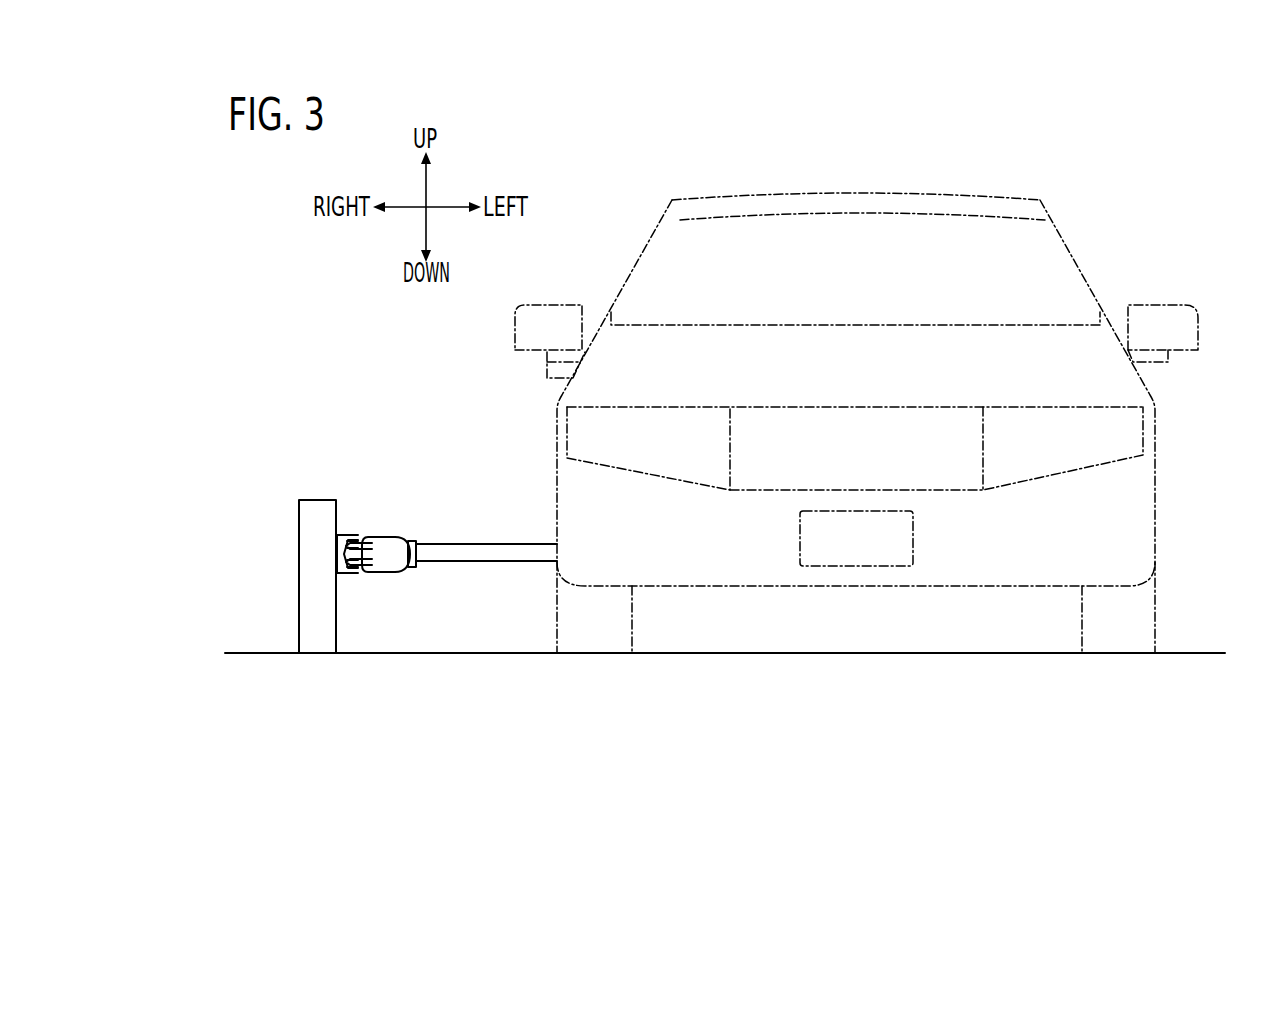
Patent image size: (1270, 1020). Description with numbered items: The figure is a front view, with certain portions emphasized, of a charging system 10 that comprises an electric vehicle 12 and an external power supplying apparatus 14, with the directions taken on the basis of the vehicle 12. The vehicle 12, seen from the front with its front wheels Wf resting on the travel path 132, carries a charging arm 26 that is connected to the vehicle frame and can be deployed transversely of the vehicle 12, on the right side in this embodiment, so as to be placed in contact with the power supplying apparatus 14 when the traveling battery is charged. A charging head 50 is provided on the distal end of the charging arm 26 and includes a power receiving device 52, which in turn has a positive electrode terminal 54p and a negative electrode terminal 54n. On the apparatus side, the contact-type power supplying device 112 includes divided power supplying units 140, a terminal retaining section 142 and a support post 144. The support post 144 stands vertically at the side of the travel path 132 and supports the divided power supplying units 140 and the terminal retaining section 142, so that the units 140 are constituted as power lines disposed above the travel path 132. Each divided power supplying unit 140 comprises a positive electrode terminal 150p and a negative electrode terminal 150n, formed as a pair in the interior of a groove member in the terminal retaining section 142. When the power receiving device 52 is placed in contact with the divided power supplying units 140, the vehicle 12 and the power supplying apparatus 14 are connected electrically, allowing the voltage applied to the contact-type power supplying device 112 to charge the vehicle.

The charging system 10 is at (856, 388).
The electric vehicle 12 is at (956, 190).
The external power supplying apparatus 14 is at (297, 534).
The charging arm 26 is at (487, 540).
The charging head 50 is at (392, 618).
The power receiving device 52 is at (392, 640).
The negative electrode terminal 54n is at (365, 567).
The positive electrode terminal 54p is at (388, 560).
The contact-type power supplying device 112 is at (350, 534).
The travel path 132 is at (1192, 653).
The divided power supplying units 140 is at (266, 555).
The terminal retaining section 142 is at (297, 529).
The support post 144 is at (317, 508).
The positive electrode terminal 150p is at (345, 540).
The negative electrode terminal 150n is at (345, 568).
The front wheels Wf is at (857, 619).